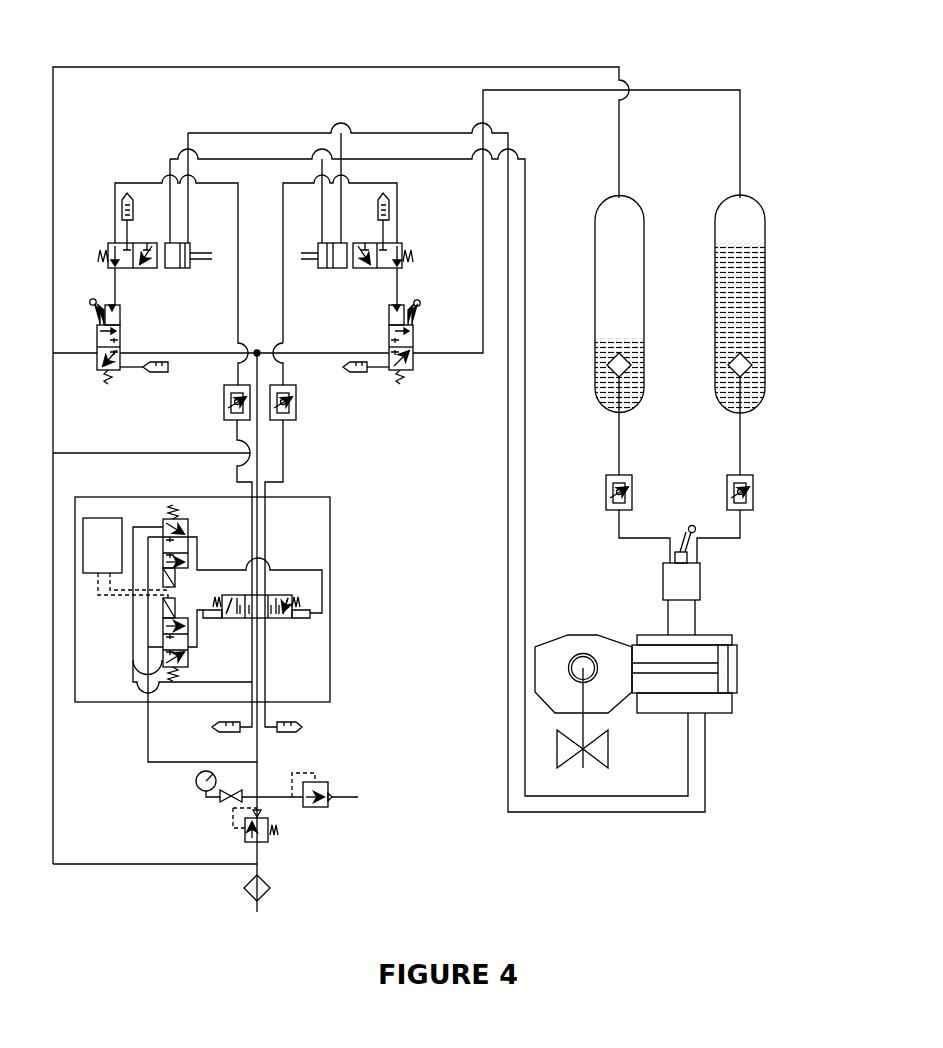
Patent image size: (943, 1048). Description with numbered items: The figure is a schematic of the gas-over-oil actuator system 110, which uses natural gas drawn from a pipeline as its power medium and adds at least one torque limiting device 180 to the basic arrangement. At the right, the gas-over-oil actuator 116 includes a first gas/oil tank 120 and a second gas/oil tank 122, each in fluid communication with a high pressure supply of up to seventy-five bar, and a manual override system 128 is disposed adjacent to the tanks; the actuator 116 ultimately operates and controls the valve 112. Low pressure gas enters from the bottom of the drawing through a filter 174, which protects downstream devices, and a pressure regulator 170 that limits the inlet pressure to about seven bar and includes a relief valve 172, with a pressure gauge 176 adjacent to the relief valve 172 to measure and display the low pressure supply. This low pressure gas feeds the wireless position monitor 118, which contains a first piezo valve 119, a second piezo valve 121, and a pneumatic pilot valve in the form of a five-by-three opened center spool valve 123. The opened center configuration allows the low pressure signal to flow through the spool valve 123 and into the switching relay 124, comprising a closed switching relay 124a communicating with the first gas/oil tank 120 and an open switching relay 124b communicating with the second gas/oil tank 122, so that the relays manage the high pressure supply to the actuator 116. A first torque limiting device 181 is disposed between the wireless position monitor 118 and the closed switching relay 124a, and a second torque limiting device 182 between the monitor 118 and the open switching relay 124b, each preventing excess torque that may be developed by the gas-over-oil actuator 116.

The gas-over-oil actuator system 110 is at (145, 46).
The valve 112 is at (609, 748).
The gas-over-oil actuator 116 is at (790, 291).
The wireless position monitor 118 is at (336, 632).
The first piezo valve 119 is at (184, 536).
The first gas/oil tank 120 is at (765, 234).
The second piezo valve 121 is at (183, 668).
The second gas/oil tank 122 is at (595, 234).
The opened center spool valve 123 is at (279, 593).
The switching relay 124 is at (394, 398).
The closed switching relay 124a is at (414, 337).
The open switching relay 124b is at (96, 338).
The manual override system 128 is at (704, 579).
The pressure regulator 170 is at (266, 843).
The relief valve 172 is at (318, 808).
The filter 174 is at (270, 895).
The pressure gauge 176 is at (220, 798).
The torque limiting device 180 is at (99, 229).
The first torque limiting device 181 is at (362, 269).
The second torque limiting device 182 is at (152, 269).